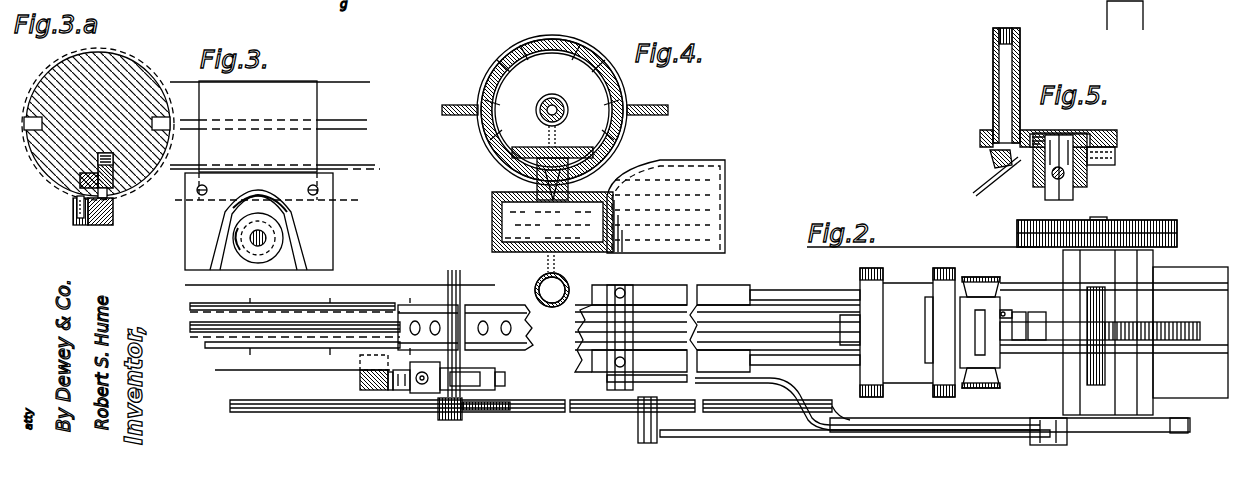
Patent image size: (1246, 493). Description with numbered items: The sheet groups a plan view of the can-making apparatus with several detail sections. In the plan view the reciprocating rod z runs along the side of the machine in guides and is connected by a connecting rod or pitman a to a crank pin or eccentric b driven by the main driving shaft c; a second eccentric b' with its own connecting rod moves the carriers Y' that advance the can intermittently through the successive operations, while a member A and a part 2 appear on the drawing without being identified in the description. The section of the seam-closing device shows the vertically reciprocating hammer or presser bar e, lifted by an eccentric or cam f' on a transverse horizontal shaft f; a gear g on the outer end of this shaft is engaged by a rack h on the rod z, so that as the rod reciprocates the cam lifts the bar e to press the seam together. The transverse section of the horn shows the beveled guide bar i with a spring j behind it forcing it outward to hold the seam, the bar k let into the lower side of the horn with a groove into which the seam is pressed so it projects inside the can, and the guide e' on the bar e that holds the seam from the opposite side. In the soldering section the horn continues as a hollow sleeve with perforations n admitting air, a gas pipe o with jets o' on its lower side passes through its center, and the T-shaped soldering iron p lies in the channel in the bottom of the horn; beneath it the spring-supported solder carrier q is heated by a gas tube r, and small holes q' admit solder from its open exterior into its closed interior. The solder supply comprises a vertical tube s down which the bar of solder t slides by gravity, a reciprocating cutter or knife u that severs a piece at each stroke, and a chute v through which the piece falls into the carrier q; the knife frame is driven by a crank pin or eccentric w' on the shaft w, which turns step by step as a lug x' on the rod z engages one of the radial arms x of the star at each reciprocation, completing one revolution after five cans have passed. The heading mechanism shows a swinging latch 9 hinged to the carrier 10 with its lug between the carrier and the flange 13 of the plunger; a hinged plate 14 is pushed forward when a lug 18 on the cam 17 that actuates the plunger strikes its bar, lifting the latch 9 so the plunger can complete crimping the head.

In FIG. 3A, the standard / frame bar A is at (125, 100).
In FIG. 3, the standard / frame bar A is at (338, 105).
In FIG. 4, the standard / frame bar A is at (515, 80).
In FIG. 2, the standard / frame bar A is at (758, 318).
In FIG. 3A, the spring j is at (105, 153).
In FIG. 3A, the bar k is at (85, 175).
In FIG. 3A, the bar i is at (115, 195).
In FIG. 3A, the main driving shaft c is at (113, 217).
In FIG. 2, the main driving shaft c is at (1105, 360).
In FIG. 3A, the guide e' is at (65, 208).
In FIG. 3, the vertically reciprocating bar e is at (264, 221).
In FIG. 3, the gear g is at (288, 214).
In FIG. 3, the rack h is at (340, 200).
In FIG. 3, the horizontal shaft f is at (258, 243).
In FIG. 3, the eccentric or cam f' is at (229, 250).
In FIG. 4, the perforations n is at (492, 95).
In FIG. 4, the gas pipe o is at (558, 106).
In FIG. 4, the openings or jets o' is at (551, 110).
In FIG. 4, the soldering iron p is at (557, 142).
In FIG. 4, the carriers Y' is at (555, 100).
In FIG. 2, the carriers Y' is at (340, 332).
In FIG. 4, the small holes q' is at (545, 173).
In FIG. 4, the solder carrier q is at (672, 206).
In FIG. 2, the solder carrier q is at (363, 374).
In FIG. 4, the gas tube r is at (560, 282).
In FIG. 5, the bar of solder t is at (1008, 65).
In FIG. 2, the bar of solder t is at (401, 369).
In FIG. 5, the tube s is at (995, 105).
In FIG. 2, the tube s is at (422, 370).
In FIG. 5, the reciprocating cutter u is at (992, 152).
In FIG. 2, the reciprocating cutter u is at (498, 381).
In FIG. 5, the chute v is at (988, 180).
In FIG. 2, the chute v is at (392, 391).
In FIG. 5, the shaft w is at (1060, 166).
In FIG. 5, the cam or eccentric or crank pin w' is at (1044, 185).
In FIG. 2, the reciprocating rod z is at (348, 412).
In FIG. 2, the bracket 2 is at (512, 328).
In FIG. 2, the lug x' is at (450, 355).
In FIG. 2, the radial arms x is at (486, 418).
In FIG. 2, the connecting rod or pitman a is at (815, 438).
In FIG. 2, the crank pin or eccentric b is at (1010, 438).
In FIG. 2, the eccentric b' is at (1146, 436).
In FIG. 2, the cam 17 is at (1058, 318).
In FIG. 2, the lug 18 is at (1040, 318).
In FIG. 2, the plate 14 is at (1022, 318).
In FIG. 2, the swinging latch 9 is at (1008, 316).
In FIG. 2, the carrier 10 is at (968, 285).
In FIG. 2, the flange 13 is at (998, 360).